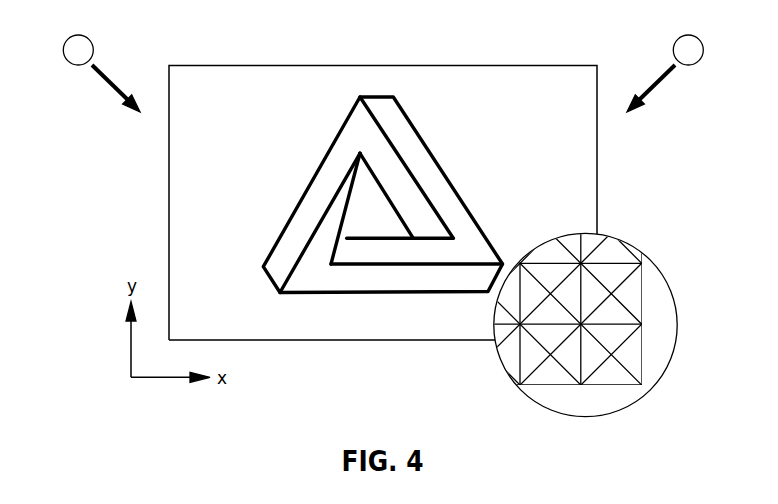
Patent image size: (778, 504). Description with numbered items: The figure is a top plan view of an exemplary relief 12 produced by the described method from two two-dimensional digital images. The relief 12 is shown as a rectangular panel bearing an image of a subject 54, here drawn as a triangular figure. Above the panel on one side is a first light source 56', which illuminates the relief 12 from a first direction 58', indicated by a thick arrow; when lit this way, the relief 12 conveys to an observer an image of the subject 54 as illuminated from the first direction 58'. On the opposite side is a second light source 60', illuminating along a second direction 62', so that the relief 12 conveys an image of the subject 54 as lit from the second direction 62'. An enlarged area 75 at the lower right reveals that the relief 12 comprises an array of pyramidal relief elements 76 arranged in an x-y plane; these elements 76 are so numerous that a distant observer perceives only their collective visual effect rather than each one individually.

The relief 12 is at (312, 66).
The subject 54 is at (423, 142).
The first light source 56' is at (53, 50).
The first direction 58' is at (125, 78).
The second light source 60' is at (712, 50).
The second direction 62' is at (641, 78).
The enlarged area 75 is at (676, 352).
The pyramidal relief elements 76 is at (660, 289).